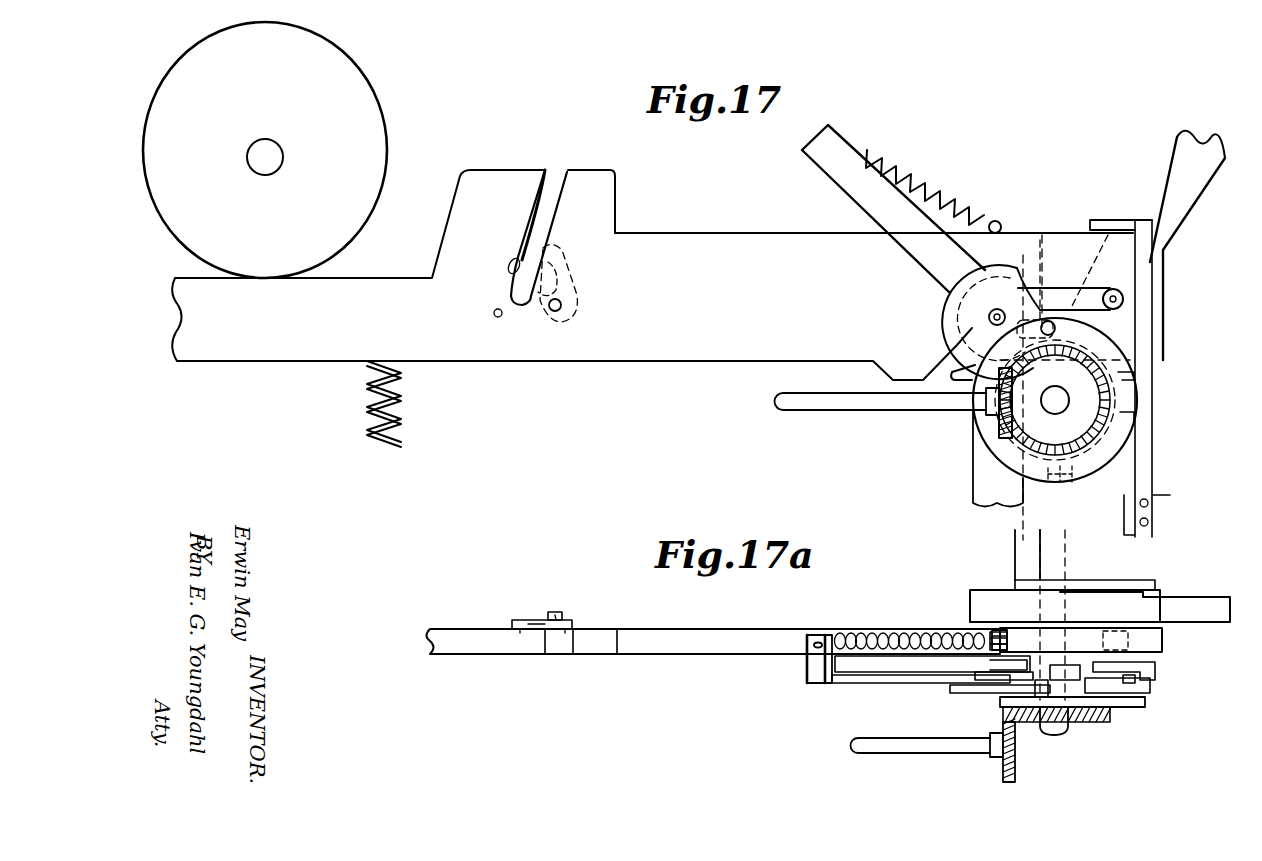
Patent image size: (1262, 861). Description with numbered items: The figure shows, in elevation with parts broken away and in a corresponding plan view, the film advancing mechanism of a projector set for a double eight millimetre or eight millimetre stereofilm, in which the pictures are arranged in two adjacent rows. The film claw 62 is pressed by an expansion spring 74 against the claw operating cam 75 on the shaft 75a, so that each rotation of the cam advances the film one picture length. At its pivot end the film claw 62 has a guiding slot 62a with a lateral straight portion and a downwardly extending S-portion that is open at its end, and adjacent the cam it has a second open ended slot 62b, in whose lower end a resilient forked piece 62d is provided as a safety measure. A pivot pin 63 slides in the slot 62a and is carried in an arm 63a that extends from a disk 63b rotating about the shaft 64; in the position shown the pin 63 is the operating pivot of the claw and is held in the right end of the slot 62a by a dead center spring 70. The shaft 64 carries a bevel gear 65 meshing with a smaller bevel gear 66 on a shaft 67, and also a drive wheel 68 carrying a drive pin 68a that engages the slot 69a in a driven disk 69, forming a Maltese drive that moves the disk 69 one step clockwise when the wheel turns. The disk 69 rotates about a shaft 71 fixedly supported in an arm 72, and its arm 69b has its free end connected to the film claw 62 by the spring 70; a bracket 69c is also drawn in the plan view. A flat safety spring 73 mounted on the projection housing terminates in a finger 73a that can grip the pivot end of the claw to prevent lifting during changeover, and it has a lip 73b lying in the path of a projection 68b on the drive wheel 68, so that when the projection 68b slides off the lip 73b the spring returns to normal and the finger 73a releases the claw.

In FIG. 17, the film claw 62 is at (693, 248).
In FIG. 17A, the film claw 62 is at (672, 644).
In FIG. 17, the guiding slot 62a is at (940, 370).
In FIG. 17, the second open ended slot 62b is at (555, 185).
In FIG. 17A, the second open ended slot 62b is at (560, 648).
In FIG. 17, the resilient forked piece 62d is at (555, 318).
In FIG. 17A, the resilient forked piece 62d is at (532, 620).
In FIG. 17, the pivot pin 63 is at (1118, 302).
In FIG. 17A, the pivot pin 63 is at (1165, 638).
In FIG. 17, the arm 63a is at (1182, 203).
In FIG. 17A, the arm 63a is at (1162, 605).
In FIG. 17A, the disk 63b is at (995, 605).
In FIG. 17, the shaft 64 is at (1068, 400).
In FIG. 17A, the shaft 64 is at (1020, 585).
In FIG. 17, the bevel gear 65 is at (1095, 438).
In FIG. 17A, the bevel gear 65 is at (1112, 722).
In FIG. 17, the smaller bevel gear 66 is at (1000, 426).
In FIG. 17A, the smaller bevel gear 66 is at (1002, 764).
In FIG. 17, the shaft 67 is at (820, 412).
In FIG. 17A, the shaft 67 is at (906, 745).
In FIG. 17, the drive wheel 68 is at (1090, 466).
In FIG. 17A, the drive wheel 68 is at (1126, 710).
In FIG. 17, the drive pin 68a is at (1056, 330).
In FIG. 17A, the drive pin 68a is at (1062, 692).
In FIG. 17, the projection 68b is at (1066, 478).
In FIG. 17A, the projection 68b is at (1080, 680).
In FIG. 17, the driven disk 69 is at (1006, 275).
In FIG. 17A, the driven disk 69 is at (953, 694).
In FIG. 17, the slot 69a is at (1040, 260).
In FIG. 17, the arm 69b is at (856, 180).
In FIG. 17A, the arm 69b is at (850, 684).
In FIG. 17A, the bracket 69c is at (806, 668).
In FIG. 17, the dead center spring 70 is at (940, 195).
In FIG. 17A, the dead center spring 70 is at (888, 633).
In FIG. 17, the shaft 71 is at (989, 320).
In FIG. 17A, the shaft 71 is at (975, 658).
In FIG. 17, the arm 72 is at (990, 478).
In FIG. 17A, the arm 72 is at (977, 675).
In FIG. 17, the flat safety spring 73 is at (1150, 468).
In FIG. 17A, the flat safety spring 73 is at (1138, 680).
In FIG. 17, the finger 73a is at (1113, 222).
In FIG. 17A, the finger 73a is at (1152, 672).
In FIG. 17, the lip 73b is at (1138, 382).
In FIG. 17A, the lip 73b is at (1150, 690).
In FIG. 17, the expansion spring 74 is at (405, 408).
In FIG. 17, the claw operating cam 75 is at (348, 78).
In FIG. 17, the shaft 75a is at (265, 150).